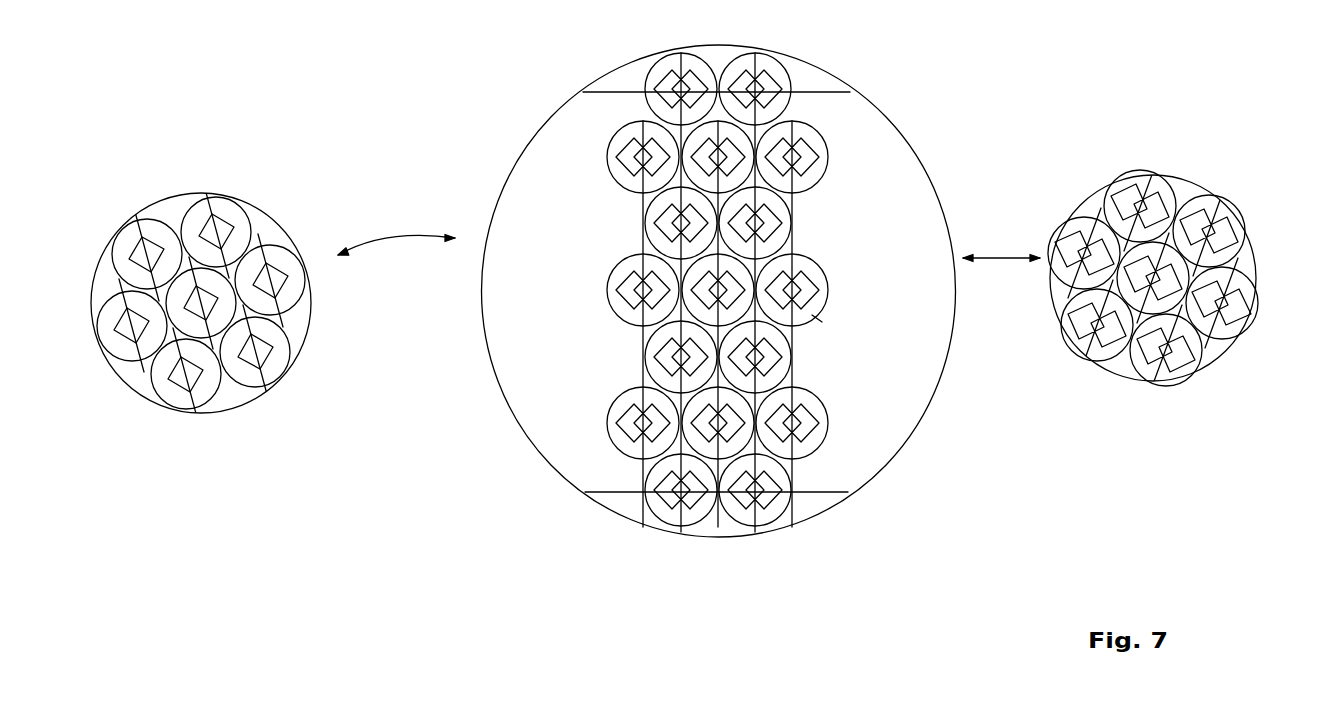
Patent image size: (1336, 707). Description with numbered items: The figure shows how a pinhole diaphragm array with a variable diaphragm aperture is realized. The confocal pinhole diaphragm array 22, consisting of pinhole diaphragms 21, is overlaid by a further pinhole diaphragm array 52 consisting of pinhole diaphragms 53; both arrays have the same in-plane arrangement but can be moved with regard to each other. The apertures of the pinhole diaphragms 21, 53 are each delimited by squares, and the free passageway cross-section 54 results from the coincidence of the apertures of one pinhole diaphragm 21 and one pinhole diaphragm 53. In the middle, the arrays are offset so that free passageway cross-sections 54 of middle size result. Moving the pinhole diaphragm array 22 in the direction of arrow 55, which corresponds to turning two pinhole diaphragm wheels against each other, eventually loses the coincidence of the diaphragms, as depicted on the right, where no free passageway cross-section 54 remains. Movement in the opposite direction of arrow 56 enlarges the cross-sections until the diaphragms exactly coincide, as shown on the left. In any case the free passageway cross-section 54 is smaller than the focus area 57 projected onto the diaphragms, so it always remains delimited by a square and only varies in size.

The pinhole diaphragm 21 is at (188, 273).
The pinhole diaphragm array 22 is at (830, 155).
The further pinhole diaphragm array 52 is at (607, 152).
The pinhole diaphragm 53 is at (195, 205).
The free passageway cross-section 54 is at (217, 237).
The arrow 55 is at (1000, 258).
The arrow 56 is at (383, 238).
The focus area 57 is at (812, 315).